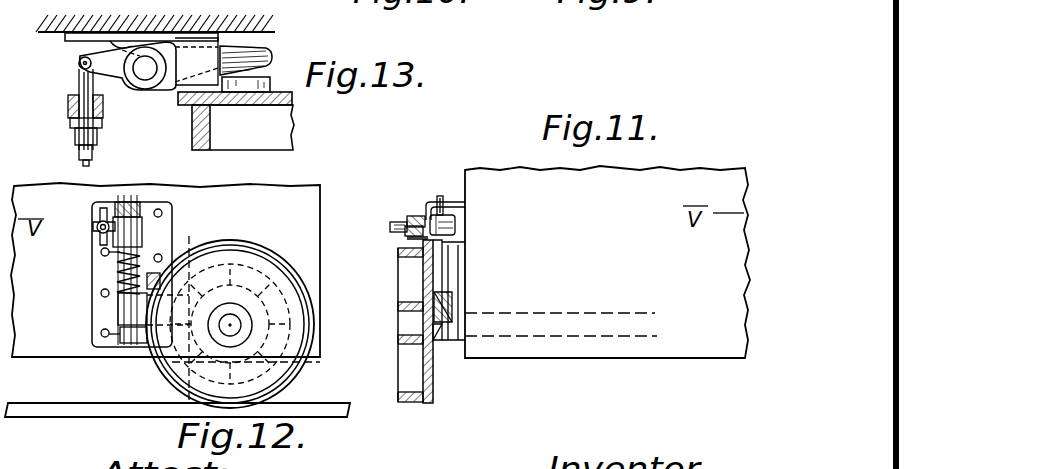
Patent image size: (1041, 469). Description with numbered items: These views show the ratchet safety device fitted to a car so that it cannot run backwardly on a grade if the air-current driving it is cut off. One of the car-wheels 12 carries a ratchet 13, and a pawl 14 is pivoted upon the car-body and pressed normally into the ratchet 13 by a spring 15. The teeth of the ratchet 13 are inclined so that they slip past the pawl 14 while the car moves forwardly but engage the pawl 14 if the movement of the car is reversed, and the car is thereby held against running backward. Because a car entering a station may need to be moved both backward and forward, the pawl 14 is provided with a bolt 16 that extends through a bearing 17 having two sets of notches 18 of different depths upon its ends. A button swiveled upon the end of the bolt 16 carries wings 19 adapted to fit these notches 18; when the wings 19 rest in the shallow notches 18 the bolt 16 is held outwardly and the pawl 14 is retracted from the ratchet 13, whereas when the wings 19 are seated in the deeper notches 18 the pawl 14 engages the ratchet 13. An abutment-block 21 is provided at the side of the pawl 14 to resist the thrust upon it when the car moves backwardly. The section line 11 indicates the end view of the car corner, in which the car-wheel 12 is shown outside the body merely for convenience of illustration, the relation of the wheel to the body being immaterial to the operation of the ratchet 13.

In FIG. 12, the section line / axle 11 is at (246, 310).
In FIG. 13, the car-wheel 12 is at (192, 128).
In FIG. 12, the car-wheel 12 is at (228, 232).
In FIG. 11, the car-wheel 12 is at (413, 394).
In FIG. 13, the ratchet 13 is at (270, 82).
In FIG. 12, the ratchet 13 is at (232, 276).
In FIG. 11, the ratchet 13 is at (433, 272).
In FIG. 13, the pawl 14 is at (272, 52).
In FIG. 12, the pawl 14 is at (180, 325).
In FIG. 11, the pawl 14 is at (445, 312).
In FIG. 13, the spring 15 is at (130, 40).
In FIG. 12, the spring 15 is at (118, 272).
In FIG. 13, the bolt 16 is at (79, 79).
In FIG. 11, the bolt 16 is at (390, 227).
In FIG. 13, the bearing 17 is at (69, 105).
In FIG. 11, the bearing 17 is at (418, 217).
In FIG. 13, the notches 18 is at (72, 126).
In FIG. 12, the notches 18 is at (96, 226).
In FIG. 11, the notches 18 is at (412, 226).
In FIG. 13, the wings 19 is at (80, 154).
In FIG. 12, the wings 19 is at (95, 234).
In FIG. 13, the abutment-block 21 is at (203, 79).